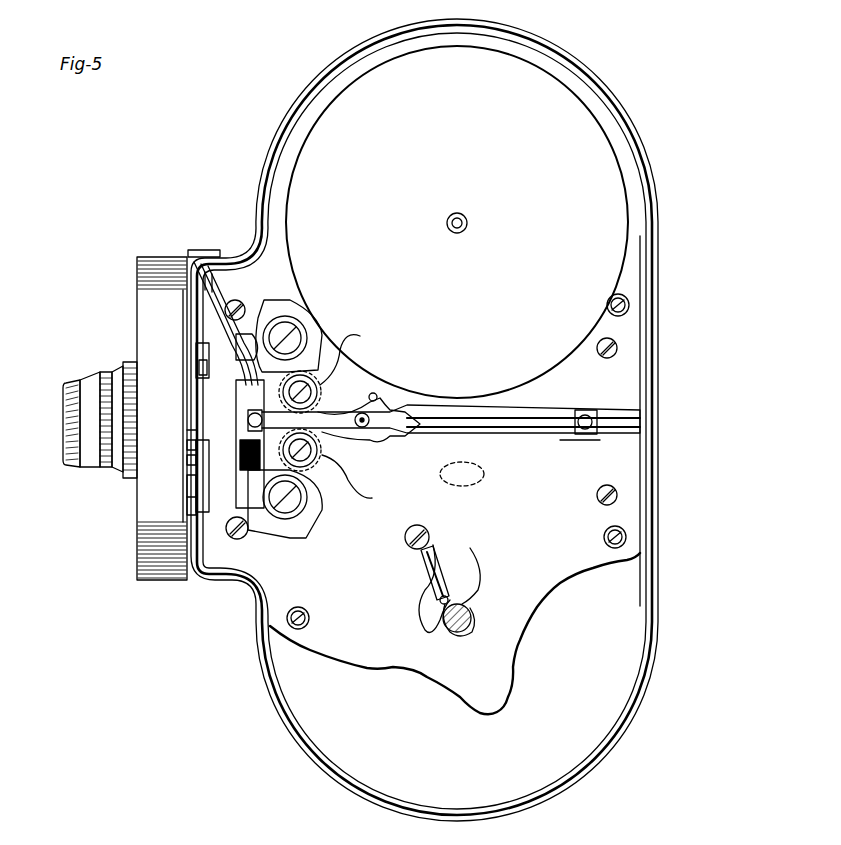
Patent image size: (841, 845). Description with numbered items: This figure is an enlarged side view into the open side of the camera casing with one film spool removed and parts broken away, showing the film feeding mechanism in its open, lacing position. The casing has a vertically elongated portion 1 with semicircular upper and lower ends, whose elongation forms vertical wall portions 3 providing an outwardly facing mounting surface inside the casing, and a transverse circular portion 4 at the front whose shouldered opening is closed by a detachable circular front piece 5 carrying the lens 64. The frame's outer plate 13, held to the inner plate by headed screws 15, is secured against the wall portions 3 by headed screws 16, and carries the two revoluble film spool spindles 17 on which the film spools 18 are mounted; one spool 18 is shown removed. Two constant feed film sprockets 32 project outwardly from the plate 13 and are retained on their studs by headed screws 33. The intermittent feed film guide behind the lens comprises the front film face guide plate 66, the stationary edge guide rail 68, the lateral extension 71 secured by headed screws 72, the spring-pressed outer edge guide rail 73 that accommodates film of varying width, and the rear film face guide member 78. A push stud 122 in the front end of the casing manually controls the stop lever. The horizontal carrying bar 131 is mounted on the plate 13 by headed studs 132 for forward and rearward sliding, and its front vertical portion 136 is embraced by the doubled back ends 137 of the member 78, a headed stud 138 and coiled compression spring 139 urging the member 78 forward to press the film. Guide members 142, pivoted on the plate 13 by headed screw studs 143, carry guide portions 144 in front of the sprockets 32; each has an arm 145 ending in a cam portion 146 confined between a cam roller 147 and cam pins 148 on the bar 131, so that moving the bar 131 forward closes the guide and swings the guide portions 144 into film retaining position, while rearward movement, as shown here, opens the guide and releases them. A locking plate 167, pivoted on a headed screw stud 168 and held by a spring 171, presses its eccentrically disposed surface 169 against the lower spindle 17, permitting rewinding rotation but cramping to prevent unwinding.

The portion of the casing 1 is at (543, 55).
The vertical wall portions 3 is at (353, 78).
The transverse circular portion 4 is at (142, 258).
The front piece 5 is at (195, 480).
The outer plate 13 is at (624, 390).
The headed screws 15 is at (618, 349).
The headed screws 16 is at (626, 304).
The film spool spindles 17 is at (465, 216).
The film spools 18 is at (598, 137).
The constant feed film sprockets 32 is at (308, 388).
The headed screws 33 is at (318, 378).
The lens 64 is at (78, 380).
The front film face guide plate 66 is at (205, 367).
The stationary edge guide rail 68 is at (202, 362).
The lateral extension 71 is at (198, 457).
The headed screws 72 is at (185, 462).
The outer edge guide rail 73 is at (197, 480).
The rear film face guide member 78 is at (200, 375).
The push stud 122 is at (207, 250).
The carrying bar 131 is at (625, 440).
The headed studs 132 is at (200, 355).
The vertical portion 136 is at (198, 270).
The doubled back ends 137 is at (205, 265).
The headed stud 138 is at (222, 532).
The coiled compression spring 139 is at (205, 580).
The guide members 142 is at (300, 340).
The headed screw studs 143 is at (287, 330).
The guide portions 144 is at (243, 330).
The arm 145 is at (330, 390).
The cam portion 146 is at (372, 396).
The cam roller 147 is at (392, 426).
The cam pins 148 is at (378, 396).
The locking plate 167 is at (430, 552).
The headed screw stud 168 is at (420, 556).
The eccentrically disposed surface 169 is at (475, 606).
The spring 171 is at (430, 578).